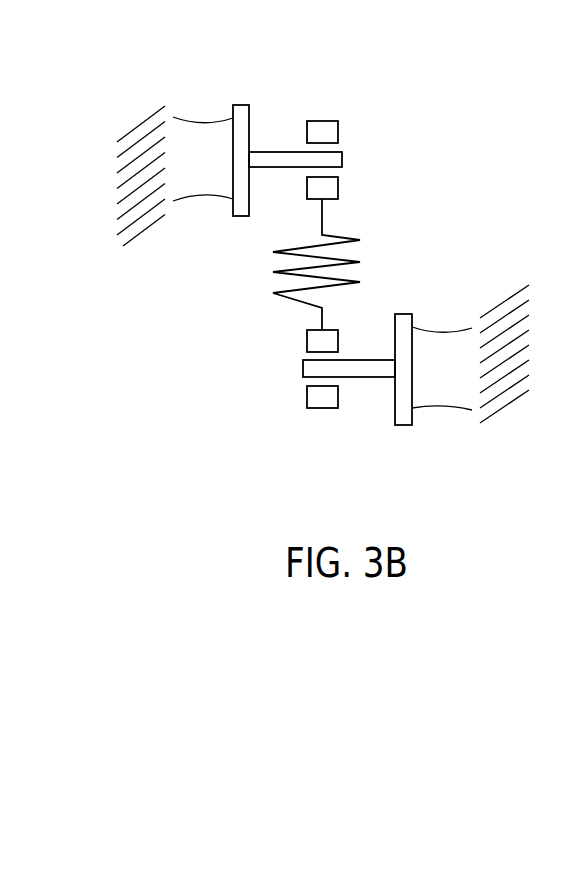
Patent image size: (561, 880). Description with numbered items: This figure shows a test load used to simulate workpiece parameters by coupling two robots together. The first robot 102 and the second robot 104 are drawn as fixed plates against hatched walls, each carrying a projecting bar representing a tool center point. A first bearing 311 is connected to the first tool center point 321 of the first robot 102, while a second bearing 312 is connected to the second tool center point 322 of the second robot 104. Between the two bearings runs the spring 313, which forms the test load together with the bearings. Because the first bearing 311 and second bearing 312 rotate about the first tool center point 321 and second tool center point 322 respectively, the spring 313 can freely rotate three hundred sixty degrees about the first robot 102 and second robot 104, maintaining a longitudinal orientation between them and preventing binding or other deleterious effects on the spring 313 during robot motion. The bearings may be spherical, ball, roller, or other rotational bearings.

The first robot 102 is at (242, 104).
The second robot 104 is at (405, 425).
The first bearing 311 is at (338, 132).
The second bearing 312 is at (307, 339).
The spring 313 is at (277, 253).
The first tool center point 321 is at (287, 151).
The second tool center point 322 is at (365, 378).